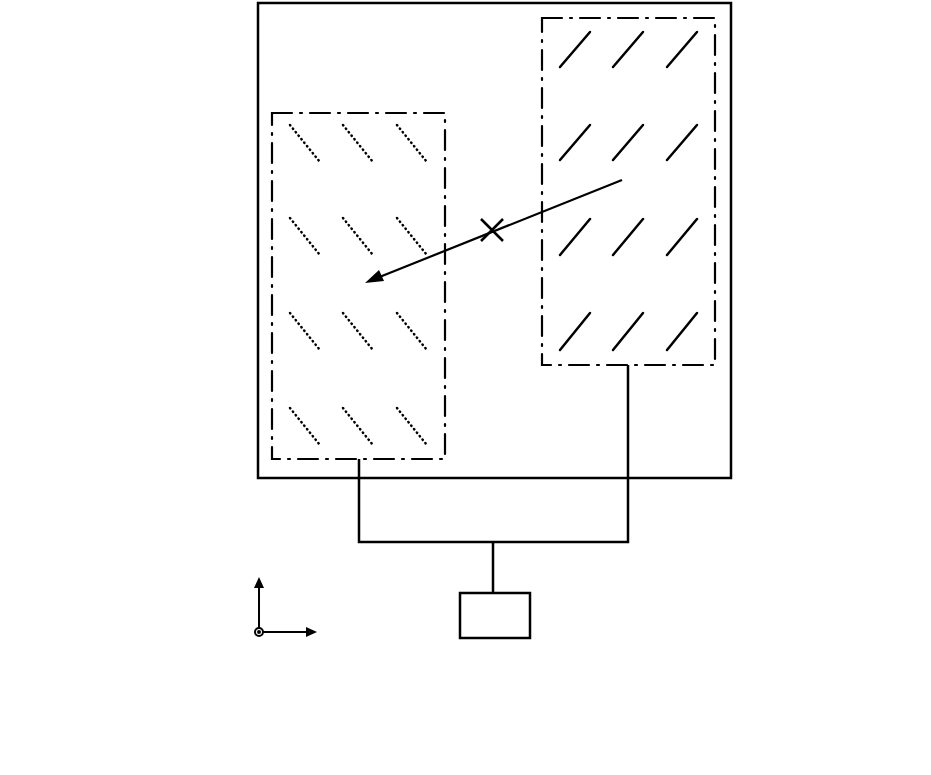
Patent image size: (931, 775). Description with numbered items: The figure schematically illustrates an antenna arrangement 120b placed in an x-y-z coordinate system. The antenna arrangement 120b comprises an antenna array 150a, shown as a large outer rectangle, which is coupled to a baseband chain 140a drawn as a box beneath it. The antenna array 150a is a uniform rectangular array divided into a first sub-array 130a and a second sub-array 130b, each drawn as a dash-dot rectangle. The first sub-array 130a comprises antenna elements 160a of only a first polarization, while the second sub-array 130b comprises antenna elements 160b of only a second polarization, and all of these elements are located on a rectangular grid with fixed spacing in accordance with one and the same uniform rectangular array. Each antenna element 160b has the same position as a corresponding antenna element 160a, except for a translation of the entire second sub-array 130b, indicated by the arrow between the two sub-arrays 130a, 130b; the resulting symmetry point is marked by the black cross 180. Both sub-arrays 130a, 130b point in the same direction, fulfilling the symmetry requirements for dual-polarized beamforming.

The antenna arrangement 120b is at (167, 106).
The antenna array 150a is at (353, 48).
The second sub-array 130b is at (418, 392).
The first sub-array 130a is at (690, 299).
The antenna elements 160b is at (308, 243).
The antenna elements 160a is at (685, 148).
The black cross 180 is at (485, 237).
The baseband chain 140a is at (530, 607).